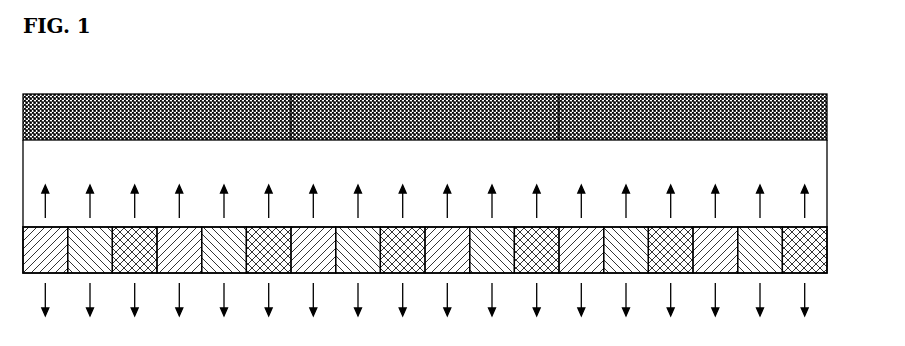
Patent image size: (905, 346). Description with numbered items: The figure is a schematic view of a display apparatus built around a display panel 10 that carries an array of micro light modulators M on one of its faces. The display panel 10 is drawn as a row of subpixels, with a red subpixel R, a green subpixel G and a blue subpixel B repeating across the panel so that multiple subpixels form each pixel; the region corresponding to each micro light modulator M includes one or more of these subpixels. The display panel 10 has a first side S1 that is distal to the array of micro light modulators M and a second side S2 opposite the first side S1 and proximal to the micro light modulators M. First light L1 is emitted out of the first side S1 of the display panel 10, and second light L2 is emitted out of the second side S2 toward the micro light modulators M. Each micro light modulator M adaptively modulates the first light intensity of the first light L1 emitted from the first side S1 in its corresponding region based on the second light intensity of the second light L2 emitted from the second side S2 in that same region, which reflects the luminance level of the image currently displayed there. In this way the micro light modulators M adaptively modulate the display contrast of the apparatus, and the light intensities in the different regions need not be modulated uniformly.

The display panel 10 is at (449, 250).
The micro light modulators M is at (425, 118).
The red subpixel R is at (380, 250).
The green subpixel G is at (425, 250).
The blue subpixel B is at (469, 250).
The first light L1 is at (425, 313).
The second light L2 is at (425, 188).
The first side S1 is at (845, 314).
The second side S2 is at (442, 183).